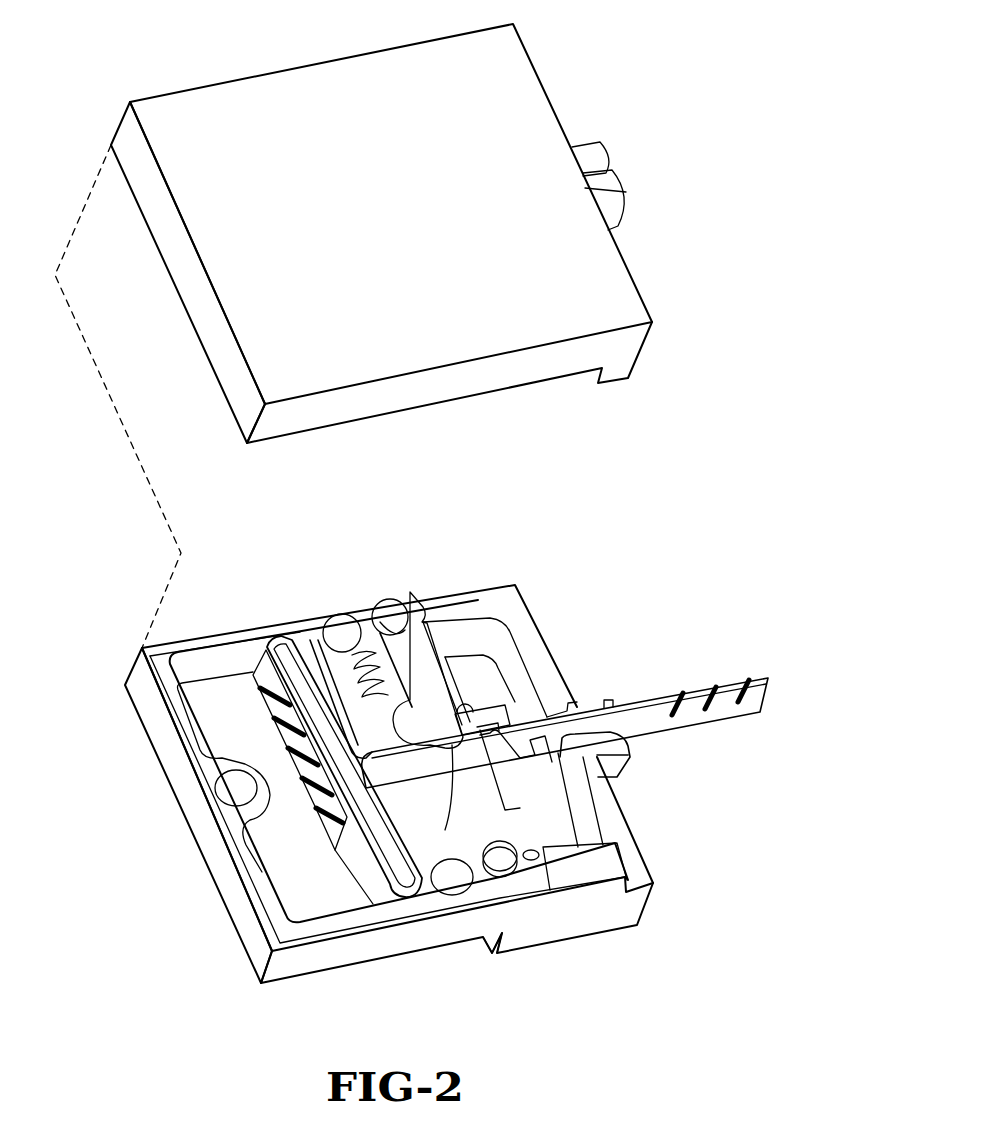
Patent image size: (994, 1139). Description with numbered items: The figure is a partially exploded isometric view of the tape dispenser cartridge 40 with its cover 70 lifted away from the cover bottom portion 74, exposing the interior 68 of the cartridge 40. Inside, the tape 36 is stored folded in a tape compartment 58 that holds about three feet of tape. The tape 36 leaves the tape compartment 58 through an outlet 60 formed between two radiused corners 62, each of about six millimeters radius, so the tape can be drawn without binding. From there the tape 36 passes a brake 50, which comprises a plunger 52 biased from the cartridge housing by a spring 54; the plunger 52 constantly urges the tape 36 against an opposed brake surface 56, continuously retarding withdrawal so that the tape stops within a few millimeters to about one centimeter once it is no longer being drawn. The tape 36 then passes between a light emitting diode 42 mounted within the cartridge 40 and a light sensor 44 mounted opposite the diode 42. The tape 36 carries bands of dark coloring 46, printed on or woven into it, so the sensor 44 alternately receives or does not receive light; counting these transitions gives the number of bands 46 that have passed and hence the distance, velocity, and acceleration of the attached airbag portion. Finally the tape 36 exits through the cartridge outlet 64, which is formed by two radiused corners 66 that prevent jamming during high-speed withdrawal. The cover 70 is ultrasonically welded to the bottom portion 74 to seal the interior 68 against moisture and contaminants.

The tape 36 is at (716, 685).
The dispenser cartridge 40 is at (507, 560).
The light emitting diode 42 is at (427, 757).
The light sensor 44 is at (507, 770).
The bands of dark coloring 46 is at (317, 820).
The brake 50 is at (398, 700).
The plunger 52 is at (440, 735).
The spring 54 is at (352, 678).
The brake surface 56 is at (433, 753).
The tape compartment 58 is at (208, 668).
The outlet of the tape compartment 60 is at (345, 742).
The radiused corners 62 is at (360, 740).
The cartridge outlet 64 is at (630, 757).
The radiused corners 66 is at (605, 703).
The interior of the cartridge 68 is at (552, 857).
The cover 70 is at (526, 104).
The cover bottom portion 74 is at (600, 937).